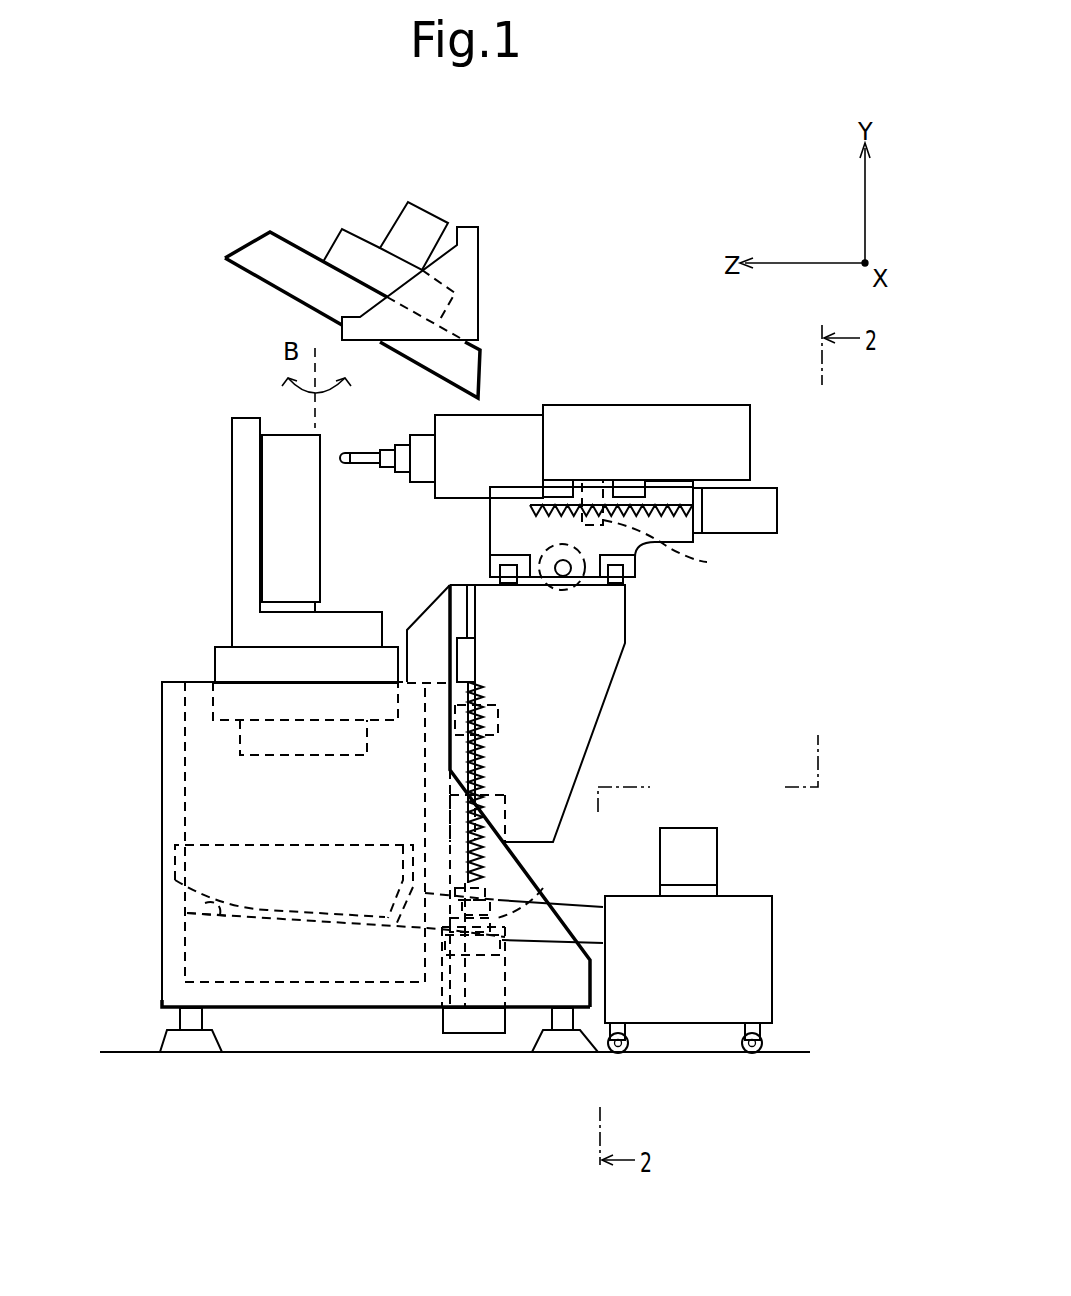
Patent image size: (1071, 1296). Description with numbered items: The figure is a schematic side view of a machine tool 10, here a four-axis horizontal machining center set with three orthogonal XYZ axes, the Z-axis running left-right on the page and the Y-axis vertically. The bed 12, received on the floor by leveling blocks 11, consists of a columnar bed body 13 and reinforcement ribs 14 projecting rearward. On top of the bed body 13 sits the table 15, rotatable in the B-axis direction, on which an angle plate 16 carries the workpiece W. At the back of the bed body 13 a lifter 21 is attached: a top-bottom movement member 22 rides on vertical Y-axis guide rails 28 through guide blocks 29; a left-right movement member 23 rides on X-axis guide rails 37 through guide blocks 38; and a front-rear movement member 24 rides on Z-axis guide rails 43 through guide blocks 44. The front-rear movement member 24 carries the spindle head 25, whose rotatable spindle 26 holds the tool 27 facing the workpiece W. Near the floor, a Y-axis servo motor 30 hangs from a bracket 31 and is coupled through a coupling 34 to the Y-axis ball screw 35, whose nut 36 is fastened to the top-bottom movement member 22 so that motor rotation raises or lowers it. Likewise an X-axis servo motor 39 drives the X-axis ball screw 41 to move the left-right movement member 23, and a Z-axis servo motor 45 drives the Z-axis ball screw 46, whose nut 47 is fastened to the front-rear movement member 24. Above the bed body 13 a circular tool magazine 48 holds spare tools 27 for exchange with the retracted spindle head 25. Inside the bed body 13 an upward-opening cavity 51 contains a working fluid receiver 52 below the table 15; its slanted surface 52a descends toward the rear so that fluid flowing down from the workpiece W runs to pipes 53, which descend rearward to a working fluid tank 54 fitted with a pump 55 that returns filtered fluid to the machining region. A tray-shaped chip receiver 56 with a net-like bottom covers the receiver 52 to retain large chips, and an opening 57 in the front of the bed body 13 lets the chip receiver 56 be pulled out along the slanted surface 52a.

The machine tool 10 is at (698, 222).
The leveling blocks 11 is at (167, 1047).
The bed 12 is at (158, 689).
The bed body 13 is at (162, 753).
The reinforcement ribs 14 is at (543, 888).
The table 15 is at (213, 662).
The angle plate 16 is at (232, 500).
The lifter 21 is at (622, 398).
The top-bottom movement member 22 is at (626, 600).
The left-right movement member 23 is at (490, 522).
The front-rear movement member 24 is at (690, 405).
The spindle head 25 is at (500, 414).
The spindle 26 is at (415, 435).
The tool 27 is at (352, 460).
The Y-axis guide rails 28 is at (450, 585).
The guide blocks 29 is at (455, 645).
The Y-axis servo motor 30 is at (492, 1033).
The bracket 31 is at (438, 935).
The coupling 34 is at (505, 898).
The Y-axis ball screw 35 is at (482, 788).
The nut 36 is at (485, 702).
The X-axis guide rails 37 is at (505, 565).
The guide blocks 38 is at (490, 565).
The X-axis servo motor 39 is at (568, 590).
The X-axis ball screw 41 is at (571, 573).
The Z-axis guide rails 43 is at (660, 481).
The guide blocks 44 is at (545, 479).
The Z-axis servo motor 45 is at (778, 500).
The Z-axis ball screw 46 is at (675, 516).
The nut 47 is at (668, 554).
The tool magazine 48 is at (248, 240).
The cavity 51 is at (190, 781).
The working fluid receiver 52 is at (273, 918).
The slanted surface 52a is at (190, 913).
The pipes 53 is at (604, 945).
The working fluid tank 54 is at (773, 917).
The pump 55 is at (718, 838).
The chip receiver 56 is at (212, 845).
The opening 57 is at (175, 912).
The workpiece W is at (322, 543).